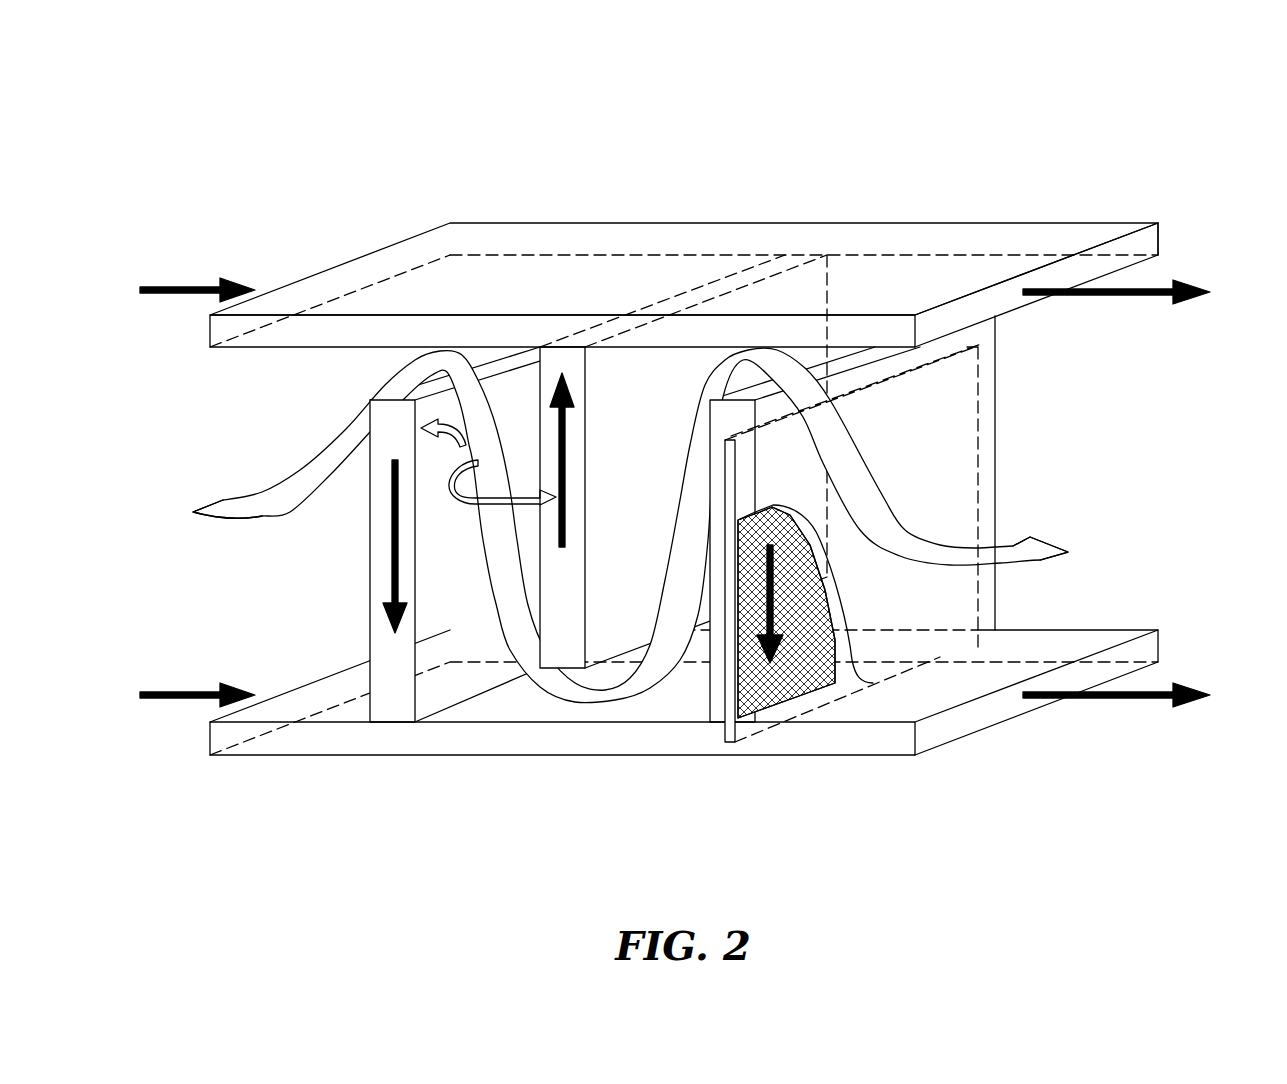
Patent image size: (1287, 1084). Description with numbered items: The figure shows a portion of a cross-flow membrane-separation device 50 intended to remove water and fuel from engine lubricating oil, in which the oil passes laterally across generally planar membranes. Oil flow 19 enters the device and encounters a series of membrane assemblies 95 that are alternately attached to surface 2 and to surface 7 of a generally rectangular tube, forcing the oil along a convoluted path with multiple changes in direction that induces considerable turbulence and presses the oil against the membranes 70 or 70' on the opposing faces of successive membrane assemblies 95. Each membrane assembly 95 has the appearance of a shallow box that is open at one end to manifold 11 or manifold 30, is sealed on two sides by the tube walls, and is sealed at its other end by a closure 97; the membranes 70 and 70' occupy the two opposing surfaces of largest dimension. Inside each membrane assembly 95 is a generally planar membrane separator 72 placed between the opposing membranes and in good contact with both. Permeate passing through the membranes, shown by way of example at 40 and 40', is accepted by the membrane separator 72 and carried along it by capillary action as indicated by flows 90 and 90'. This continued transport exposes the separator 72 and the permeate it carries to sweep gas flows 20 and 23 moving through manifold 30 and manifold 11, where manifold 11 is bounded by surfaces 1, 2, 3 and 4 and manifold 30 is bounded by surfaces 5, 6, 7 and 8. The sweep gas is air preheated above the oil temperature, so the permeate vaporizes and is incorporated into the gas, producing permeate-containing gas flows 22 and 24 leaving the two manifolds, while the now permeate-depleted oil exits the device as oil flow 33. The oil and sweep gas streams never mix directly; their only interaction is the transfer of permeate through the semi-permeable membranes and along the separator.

The manifold surface 1 is at (382, 757).
The manifold surface 2 is at (273, 707).
The manifold surface 3 is at (277, 745).
The manifold surface 4 is at (1087, 645).
The manifold surface 5 is at (950, 238).
The manifold surface 6 is at (805, 243).
The manifold surface 7 is at (1040, 312).
The manifold surface 8 is at (740, 335).
The manifold 11 is at (982, 713).
The oil flow 19 is at (228, 505).
The sweep gas flow 20 is at (200, 287).
The permeate-containing gas flow 22 is at (1145, 291).
The sweep gas flow 23 is at (200, 692).
The permeate-containing gas flow 24 is at (1103, 698).
The manifold 30 is at (367, 273).
The oil flow 33 is at (955, 547).
The permeate flow 40 is at (488, 530).
The permeate flow 40' is at (442, 474).
The membrane-separation device 50 is at (1160, 222).
The membrane 70 is at (626, 598).
The membrane 70' is at (645, 446).
The membrane separator 72 is at (792, 678).
The permeate flow along separator 90 is at (597, 475).
The permeate flow along separator 90' is at (617, 562).
The membrane assembly 95 is at (598, 380).
The closure 97 is at (838, 358).